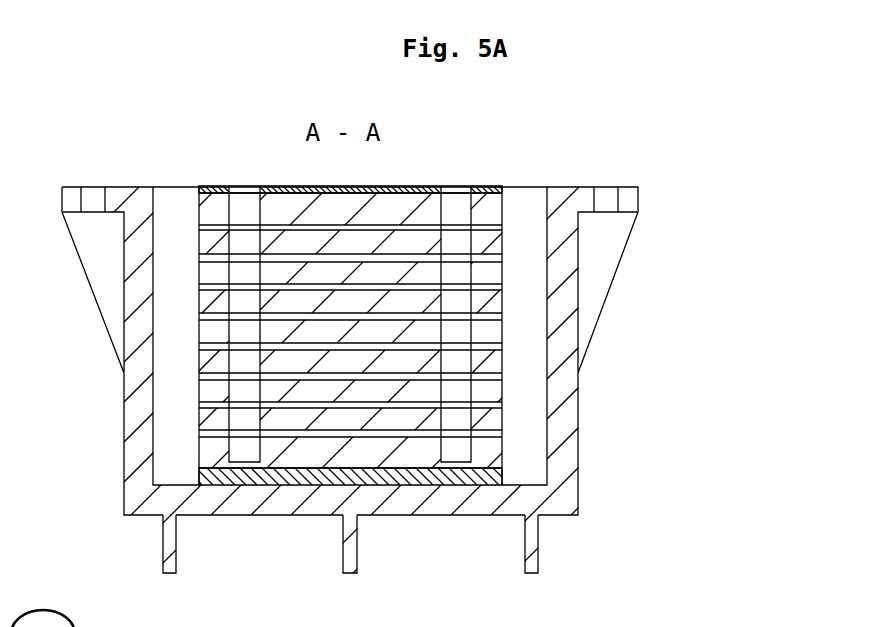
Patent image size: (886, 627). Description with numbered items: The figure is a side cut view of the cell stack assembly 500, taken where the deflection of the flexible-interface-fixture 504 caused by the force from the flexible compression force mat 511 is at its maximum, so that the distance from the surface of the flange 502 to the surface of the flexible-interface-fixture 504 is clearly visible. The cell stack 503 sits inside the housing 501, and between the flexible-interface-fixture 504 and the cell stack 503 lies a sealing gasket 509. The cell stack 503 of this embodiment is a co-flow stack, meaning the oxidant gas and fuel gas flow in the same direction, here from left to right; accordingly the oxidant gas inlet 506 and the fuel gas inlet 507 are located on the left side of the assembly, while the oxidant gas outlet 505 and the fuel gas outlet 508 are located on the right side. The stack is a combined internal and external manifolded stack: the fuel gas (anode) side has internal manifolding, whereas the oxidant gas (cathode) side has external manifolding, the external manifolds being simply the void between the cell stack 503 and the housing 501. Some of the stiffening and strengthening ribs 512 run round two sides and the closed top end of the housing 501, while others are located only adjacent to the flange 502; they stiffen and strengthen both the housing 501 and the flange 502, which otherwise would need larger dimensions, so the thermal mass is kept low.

The cell stack assembly 500 is at (109, 90).
The housing 501 is at (576, 336).
The flange 502 is at (609, 185).
The cell stack 503 is at (425, 419).
The flexible-interface-fixture 504 is at (348, 179).
The oxidant gas outlet 505 is at (540, 254).
The oxidant gas inlet 506 is at (162, 372).
The fuel gas inlet 507 is at (233, 166).
The fuel gas outlet 508 is at (473, 176).
The sealing gasket 509 is at (418, 180).
The flexible compression force mat 511 is at (491, 475).
The stiffening and strengthening ribs 512 is at (547, 547).